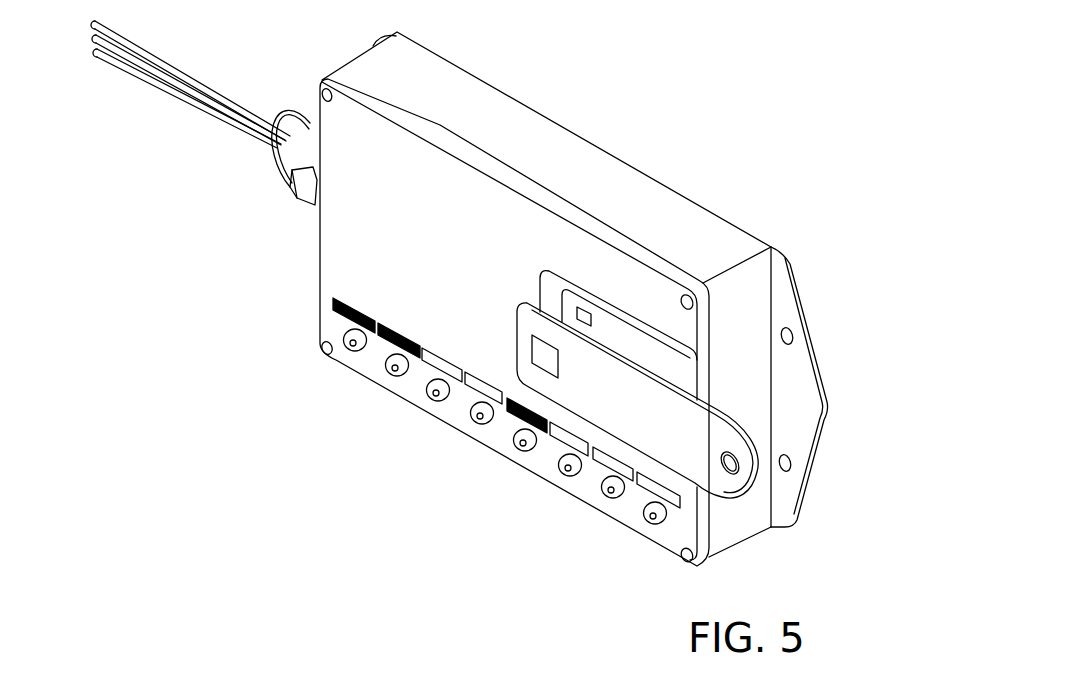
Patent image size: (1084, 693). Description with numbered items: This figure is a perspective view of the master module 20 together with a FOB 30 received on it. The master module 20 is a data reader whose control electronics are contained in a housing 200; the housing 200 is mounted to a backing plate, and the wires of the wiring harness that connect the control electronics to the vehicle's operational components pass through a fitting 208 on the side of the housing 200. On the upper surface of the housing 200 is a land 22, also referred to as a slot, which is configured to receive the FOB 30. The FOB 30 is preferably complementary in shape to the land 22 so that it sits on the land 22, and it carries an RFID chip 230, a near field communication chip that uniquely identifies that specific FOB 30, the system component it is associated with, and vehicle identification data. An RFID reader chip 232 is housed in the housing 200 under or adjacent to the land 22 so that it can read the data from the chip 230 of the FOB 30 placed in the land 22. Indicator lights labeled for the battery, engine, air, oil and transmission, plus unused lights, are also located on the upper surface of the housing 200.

The master module 20 is at (285, 287).
The housing 200 is at (523, 137).
The fitting 208 is at (283, 178).
The land 22 is at (655, 340).
The RFID reader chip 232 is at (585, 308).
The RFID chip 230 is at (533, 352).
The FOB 30 is at (617, 422).